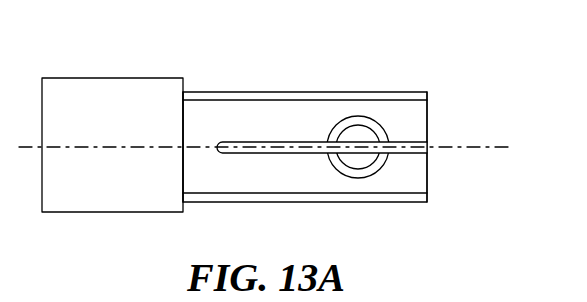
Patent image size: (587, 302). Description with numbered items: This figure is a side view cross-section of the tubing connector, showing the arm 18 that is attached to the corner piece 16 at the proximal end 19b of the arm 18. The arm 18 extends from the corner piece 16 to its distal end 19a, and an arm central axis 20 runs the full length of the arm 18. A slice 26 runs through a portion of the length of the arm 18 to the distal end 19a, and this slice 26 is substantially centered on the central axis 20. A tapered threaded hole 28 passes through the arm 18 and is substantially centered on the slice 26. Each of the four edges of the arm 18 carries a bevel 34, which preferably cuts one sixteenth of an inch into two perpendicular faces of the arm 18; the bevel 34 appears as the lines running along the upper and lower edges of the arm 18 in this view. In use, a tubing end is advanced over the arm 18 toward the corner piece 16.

The corner piece 16 is at (78, 95).
The arm 18 is at (233, 100).
The distal end 19a is at (210, 79).
The proximal end 19b is at (425, 82).
The arm central axis 20 is at (487, 147).
The slice 26 is at (426, 156).
The tapered threaded hole 28 is at (355, 158).
The bevel 34 is at (310, 98).